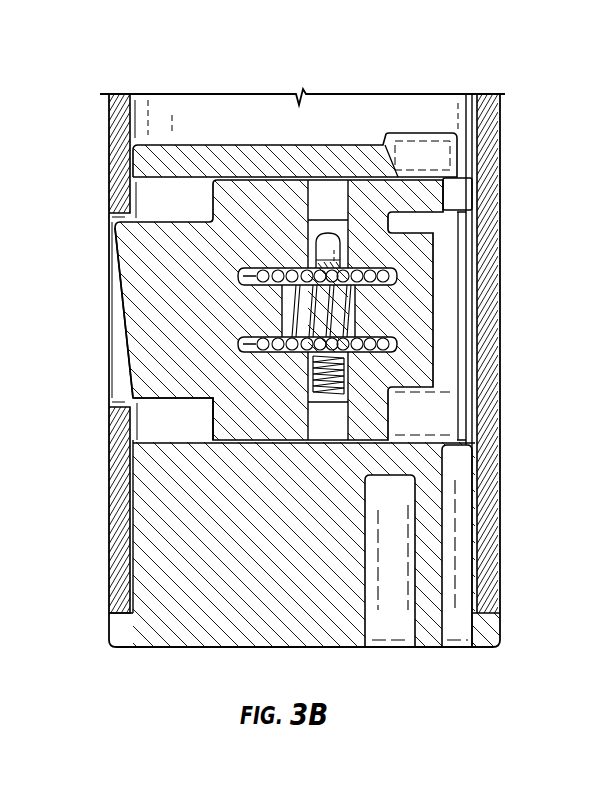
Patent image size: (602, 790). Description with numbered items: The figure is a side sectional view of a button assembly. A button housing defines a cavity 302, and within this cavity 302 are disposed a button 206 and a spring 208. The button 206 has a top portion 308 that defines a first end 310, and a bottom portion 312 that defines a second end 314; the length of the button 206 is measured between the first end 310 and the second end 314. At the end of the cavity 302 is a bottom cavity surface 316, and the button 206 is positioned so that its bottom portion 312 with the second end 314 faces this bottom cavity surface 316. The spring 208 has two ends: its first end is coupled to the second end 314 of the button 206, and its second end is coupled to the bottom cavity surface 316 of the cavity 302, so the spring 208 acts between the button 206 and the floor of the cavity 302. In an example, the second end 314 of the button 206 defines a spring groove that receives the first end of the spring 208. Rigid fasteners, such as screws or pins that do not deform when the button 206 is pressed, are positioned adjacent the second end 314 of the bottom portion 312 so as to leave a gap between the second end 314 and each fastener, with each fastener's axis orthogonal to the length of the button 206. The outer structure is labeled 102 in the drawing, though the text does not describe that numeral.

The housing 102 is at (495, 158).
The button 206 is at (88, 281).
The spring 208 is at (353, 322).
The cavity 302 is at (148, 190).
The top portion 308 is at (170, 394).
The first end 310 is at (133, 331).
The bottom portion 312 is at (240, 190).
The second end 314 is at (333, 420).
The bottom cavity surface 316 is at (332, 425).